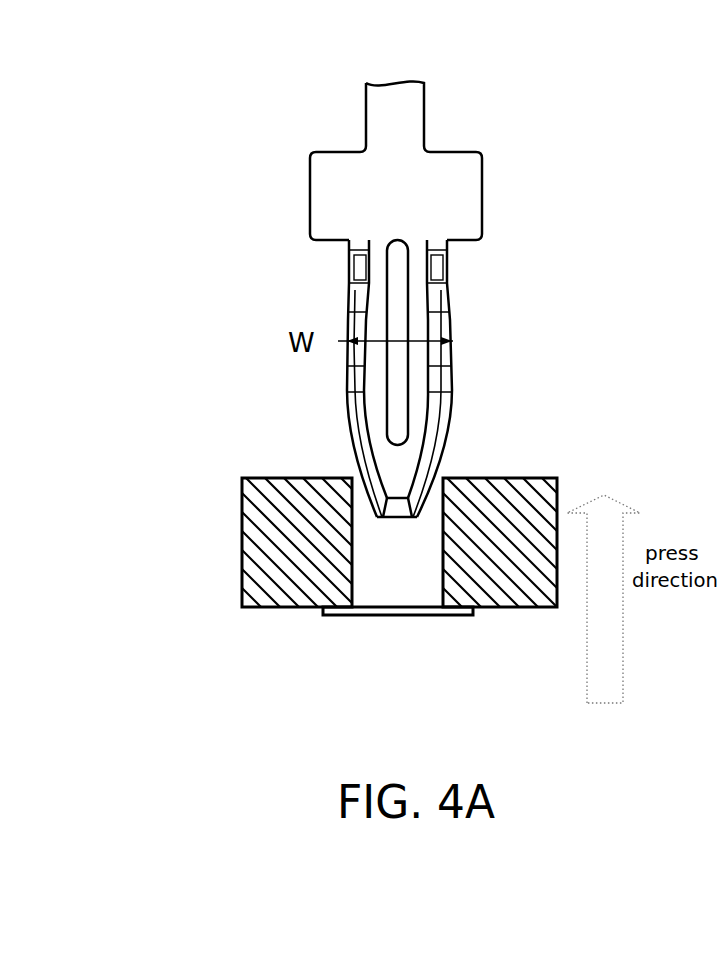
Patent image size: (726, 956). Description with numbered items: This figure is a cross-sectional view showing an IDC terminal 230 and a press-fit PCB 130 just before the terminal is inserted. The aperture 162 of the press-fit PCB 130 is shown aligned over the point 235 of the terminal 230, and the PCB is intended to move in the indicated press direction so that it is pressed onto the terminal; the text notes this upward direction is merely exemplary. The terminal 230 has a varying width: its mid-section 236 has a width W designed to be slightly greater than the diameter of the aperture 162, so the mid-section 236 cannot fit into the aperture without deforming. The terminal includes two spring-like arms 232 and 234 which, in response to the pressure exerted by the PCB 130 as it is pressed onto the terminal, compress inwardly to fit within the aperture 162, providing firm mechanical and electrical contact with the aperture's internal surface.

The press-fit PCB 130 is at (267, 477).
The aperture 162 is at (413, 582).
The terminal 230 is at (495, 237).
The arm 232 is at (344, 305).
The arm 234 is at (449, 410).
The point 235 is at (403, 518).
The mid-section 236 is at (454, 341).